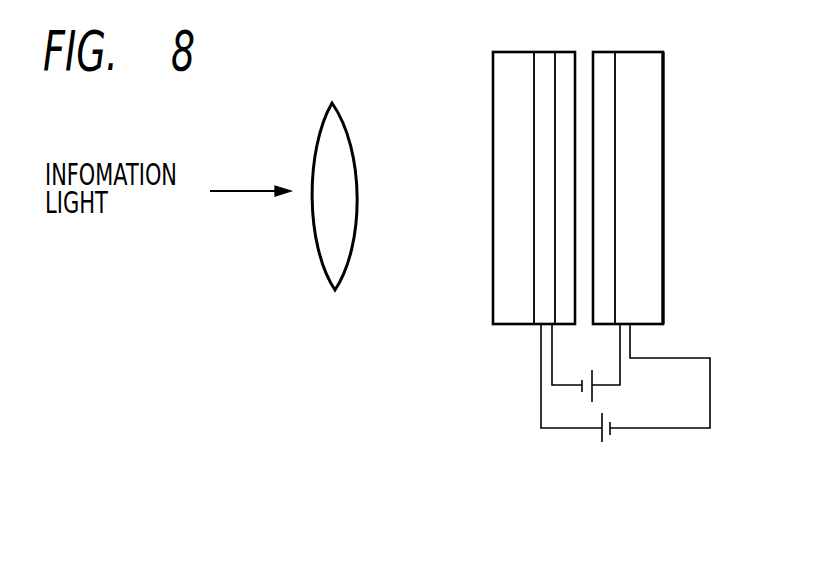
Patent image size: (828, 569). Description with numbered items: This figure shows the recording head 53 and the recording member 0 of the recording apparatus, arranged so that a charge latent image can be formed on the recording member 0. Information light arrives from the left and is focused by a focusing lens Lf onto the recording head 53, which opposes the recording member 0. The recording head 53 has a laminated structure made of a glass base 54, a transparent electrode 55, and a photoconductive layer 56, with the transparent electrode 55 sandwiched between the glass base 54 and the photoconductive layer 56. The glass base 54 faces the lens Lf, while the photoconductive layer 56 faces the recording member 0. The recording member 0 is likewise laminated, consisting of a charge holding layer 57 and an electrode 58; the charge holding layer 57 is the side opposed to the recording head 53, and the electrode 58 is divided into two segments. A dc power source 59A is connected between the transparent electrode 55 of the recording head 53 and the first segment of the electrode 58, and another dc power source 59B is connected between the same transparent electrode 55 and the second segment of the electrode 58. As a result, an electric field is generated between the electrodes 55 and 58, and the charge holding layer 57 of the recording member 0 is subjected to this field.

The recording head 53 is at (575, 331).
The glass base 54 is at (512, 66).
The transparent electrode 55 is at (548, 64).
The photoconductive layer 56 is at (572, 64).
The charge holding layer 57 is at (605, 109).
The electrode 58 is at (648, 235).
The dc power source 59A is at (604, 443).
The dc power source 59B is at (600, 398).
The recording member 0 is at (663, 46).
The focusing lens Lf is at (345, 126).